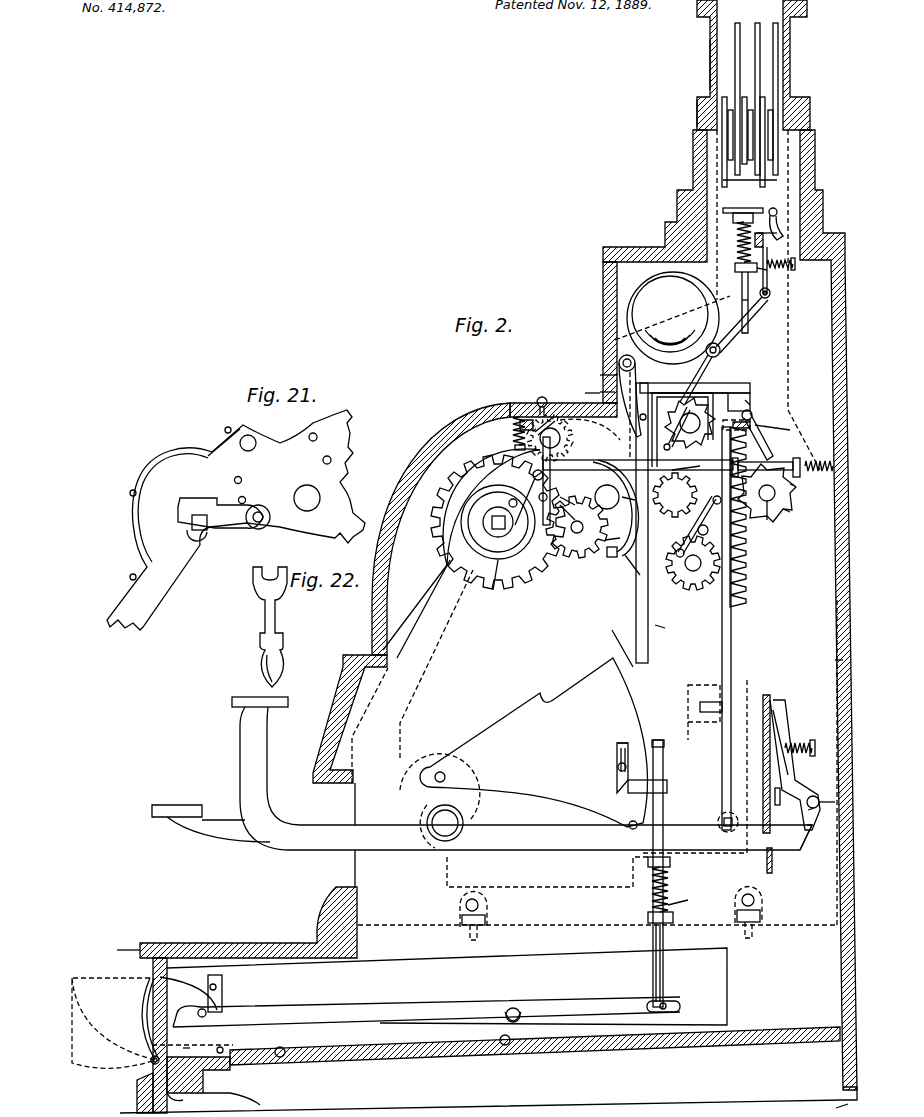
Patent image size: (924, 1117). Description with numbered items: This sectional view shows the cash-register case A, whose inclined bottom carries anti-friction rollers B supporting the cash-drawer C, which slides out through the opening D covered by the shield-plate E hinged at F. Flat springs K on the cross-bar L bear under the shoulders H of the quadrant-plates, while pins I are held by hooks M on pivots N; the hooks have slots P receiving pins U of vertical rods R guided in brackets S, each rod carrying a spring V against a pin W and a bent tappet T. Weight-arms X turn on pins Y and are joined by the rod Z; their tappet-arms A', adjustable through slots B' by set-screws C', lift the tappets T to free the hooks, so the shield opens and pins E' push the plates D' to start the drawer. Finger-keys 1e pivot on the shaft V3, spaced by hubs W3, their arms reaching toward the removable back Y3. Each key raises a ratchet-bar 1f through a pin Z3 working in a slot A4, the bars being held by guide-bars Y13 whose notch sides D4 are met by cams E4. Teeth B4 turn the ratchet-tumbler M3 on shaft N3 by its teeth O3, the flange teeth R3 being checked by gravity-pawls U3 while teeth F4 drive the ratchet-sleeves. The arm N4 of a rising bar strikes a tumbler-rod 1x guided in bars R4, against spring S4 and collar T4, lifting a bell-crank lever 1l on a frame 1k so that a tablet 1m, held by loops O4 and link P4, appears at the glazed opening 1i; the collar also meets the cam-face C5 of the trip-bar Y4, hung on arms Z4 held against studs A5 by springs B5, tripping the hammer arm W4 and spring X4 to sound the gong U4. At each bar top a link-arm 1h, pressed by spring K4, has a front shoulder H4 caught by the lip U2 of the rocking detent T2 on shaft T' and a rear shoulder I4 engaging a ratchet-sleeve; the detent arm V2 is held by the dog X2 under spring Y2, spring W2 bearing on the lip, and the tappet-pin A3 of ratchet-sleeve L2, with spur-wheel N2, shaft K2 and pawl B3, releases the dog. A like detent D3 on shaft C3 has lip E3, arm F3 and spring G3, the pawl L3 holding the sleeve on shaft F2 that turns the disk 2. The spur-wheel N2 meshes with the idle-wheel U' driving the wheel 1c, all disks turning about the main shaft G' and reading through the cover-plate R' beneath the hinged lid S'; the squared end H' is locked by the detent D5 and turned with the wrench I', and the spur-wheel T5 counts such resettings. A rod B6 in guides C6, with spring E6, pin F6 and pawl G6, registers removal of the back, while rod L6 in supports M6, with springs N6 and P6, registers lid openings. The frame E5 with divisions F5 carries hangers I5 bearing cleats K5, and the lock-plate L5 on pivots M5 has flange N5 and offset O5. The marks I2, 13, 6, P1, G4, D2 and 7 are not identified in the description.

In FIG. 2, the frame casing S' is at (585, 545).
In FIG. 2, the keys 1x is at (740, 70).
In FIG. 2, the short keys 1k is at (772, 117).
In FIG. 2, the key guide 1i is at (710, 58).
In FIG. 2, the collar O4 is at (697, 115).
In FIG. 2, the key stop 1l is at (754, 180).
In FIG. 2, the plunger head R4 is at (733, 216).
In FIG. 2, the spring S4 is at (735, 242).
In FIG. 2, the plunger rod C5 is at (738, 268).
In FIG. 2, the rod 1m is at (749, 333).
In FIG. 2, the pivot Z4 is at (777, 203).
In FIG. 2, the latch B5 is at (785, 225).
In FIG. 2, the pin A5 is at (779, 232).
In FIG. 2, the lever Y4 is at (773, 263).
In FIG. 2, the spring X4 is at (790, 270).
In FIG. 2, the arm T4 is at (773, 278).
In FIG. 2, the pivot W4 is at (771, 293).
In FIG. 2, the link P4 is at (750, 318).
In FIG. 2, the drum U4 is at (672, 318).
In FIG. 2, the lever L2 is at (712, 378).
In FIG. 2, the link E3 is at (639, 407).
In FIG. 2, the bracket N4 is at (752, 386).
In FIG. 2, the bar N2 is at (700, 395).
In FIG. 2, the vertical bar I2 is at (648, 620).
In FIG. 2, the ratchet wheel K2 is at (690, 423).
In FIG. 2, the frame A3 is at (682, 430).
In FIG. 2, the guide B3 is at (740, 415).
In FIG. 2, the pin 13 is at (772, 397).
In FIG. 2, the block D4 is at (752, 425).
In FIG. 2, the pawl U3 is at (765, 435).
In FIG. 2, the pivot Y is at (435, 777).
In FIG. 2, the rod E4 is at (785, 420).
In FIG. 2, the rack B4 is at (748, 580).
In FIG. 2, the rack bar 1f is at (733, 642).
In FIG. 2, the horizontal bar X2 is at (526, 655).
In FIG. 2, the bar R3 is at (765, 473).
In FIG. 2, the block C6 is at (740, 462).
In FIG. 2, the block E6 is at (807, 457).
In FIG. 2, the spring F6 is at (833, 464).
In FIG. 2, the rod 6 is at (808, 440).
In FIG. 2, the ratchet P1 is at (767, 493).
In FIG. 2, the pawl bar B6 is at (796, 490).
In FIG. 2, the tooth M3 is at (788, 513).
In FIG. 2, the pin O3 is at (770, 522).
In FIG. 2, the pivot N3 is at (708, 532).
In FIG. 2, the gear G4 is at (714, 553).
In FIG. 2, the gear F4 is at (675, 495).
In FIG. 2, the pawl F5 is at (689, 538).
In FIG. 2, the pin L3 is at (676, 550).
In FIG. 2, the bar F3 is at (686, 464).
In FIG. 2, the arm I4 is at (660, 632).
In FIG. 2, the pawl 2 is at (680, 437).
In FIG. 2, the main gear G' is at (491, 522).
In FIG. 2, the cover plate R' is at (461, 549).
In FIG. 2, the pin O5 is at (661, 653).
In FIG. 2, the shaft T5 is at (495, 585).
In FIG. 2, the cover 1c is at (470, 565).
In FIG. 2, the gear W2 is at (577, 527).
In FIG. 2, the pin U' is at (574, 513).
In FIG. 2, the pivot T' is at (607, 497).
In FIG. 21, the pivot T' is at (236, 520).
In FIG. 2, the lever V2 is at (615, 508).
In FIG. 2, the pin K4 is at (634, 502).
In FIG. 2, the pin T2 is at (621, 527).
In FIG. 2, the block U2 is at (610, 558).
In FIG. 2, the arm H4 is at (635, 559).
In FIG. 2, the bar 1h is at (636, 605).
In FIG. 2, the lever H' is at (542, 520).
In FIG. 21, the lever H' is at (179, 523).
In FIG. 2, the gear D2 is at (551, 438).
In FIG. 2, the arc Y2 is at (590, 429).
In FIG. 2, the rod F2 is at (547, 425).
In FIG. 2, the bolt M6 is at (523, 418).
In FIG. 2, the nut N6 is at (510, 439).
In FIG. 2, the pivot L6 is at (547, 400).
In FIG. 2, the cover G6 is at (500, 455).
In FIG. 2, the rod C3 is at (601, 372).
In FIG. 2, the rod D3 is at (580, 385).
In FIG. 2, the rod G3 is at (601, 392).
In FIG. 2, the spring P6 is at (686, 626).
In FIG. 2, the wall Y3 is at (853, 659).
In FIG. 2, the block Y13 is at (700, 707).
In FIG. 2, the rod T is at (666, 872).
In FIG. 2, the arm A' is at (665, 783).
In FIG. 2, the bracket C' is at (613, 768).
In FIG. 21, the bracket C' is at (194, 542).
In FIG. 2, the slot B' is at (626, 734).
In FIG. 2, the cam plate X is at (534, 742).
In FIG. 2, the pin Z is at (630, 829).
In FIG. 2, the handle 1e is at (222, 769).
In FIG. 2, the roller V3 is at (445, 823).
In FIG. 2, the arc W3 is at (440, 842).
In FIG. 2, the bar end N5 is at (812, 837).
In FIG. 2, the plate E5 is at (772, 866).
In FIG. 2, the block K5 is at (782, 795).
In FIG. 2, the lever L5 is at (800, 785).
In FIG. 2, the rod I5 is at (785, 775).
In FIG. 2, the pin M5 is at (840, 802).
In FIG. 2, the pivot A4 is at (720, 820).
In FIG. 2, the guide Z3 is at (740, 818).
In FIG. 2, the collar S is at (672, 889).
In FIG. 2, the spring V is at (668, 893).
In FIG. 2, the washer W is at (689, 896).
In FIG. 2, the rod R is at (676, 962).
In FIG. 2, the slot P is at (680, 1007).
In FIG. 2, the pin U is at (678, 992).
In FIG. 2, the base A is at (237, 922).
In FIG. 2, the plate C is at (447, 1002).
In FIG. 2, the bar M is at (375, 1002).
In FIG. 2, the pivot N is at (518, 1010).
In FIG. 2, the base plate B is at (488, 1070).
In FIG. 2, the arc D is at (188, 993).
In FIG. 2, the block D' is at (228, 993).
In FIG. 2, the pivot I is at (208, 1013).
In FIG. 2, the door E is at (115, 1023).
In FIG. 2, the rod E' is at (200, 1040).
In FIG. 2, the hinge F is at (150, 1060).
In FIG. 2, the block H is at (183, 1035).
In FIG. 2, the lug L is at (181, 1102).
In FIG. 2, the spring K is at (240, 1095).
In FIG. 2, the line 7 is at (803, 1110).
In FIG. 21, the lever D5 is at (200, 500).
In FIG. 22, the wrench I' is at (276, 627).